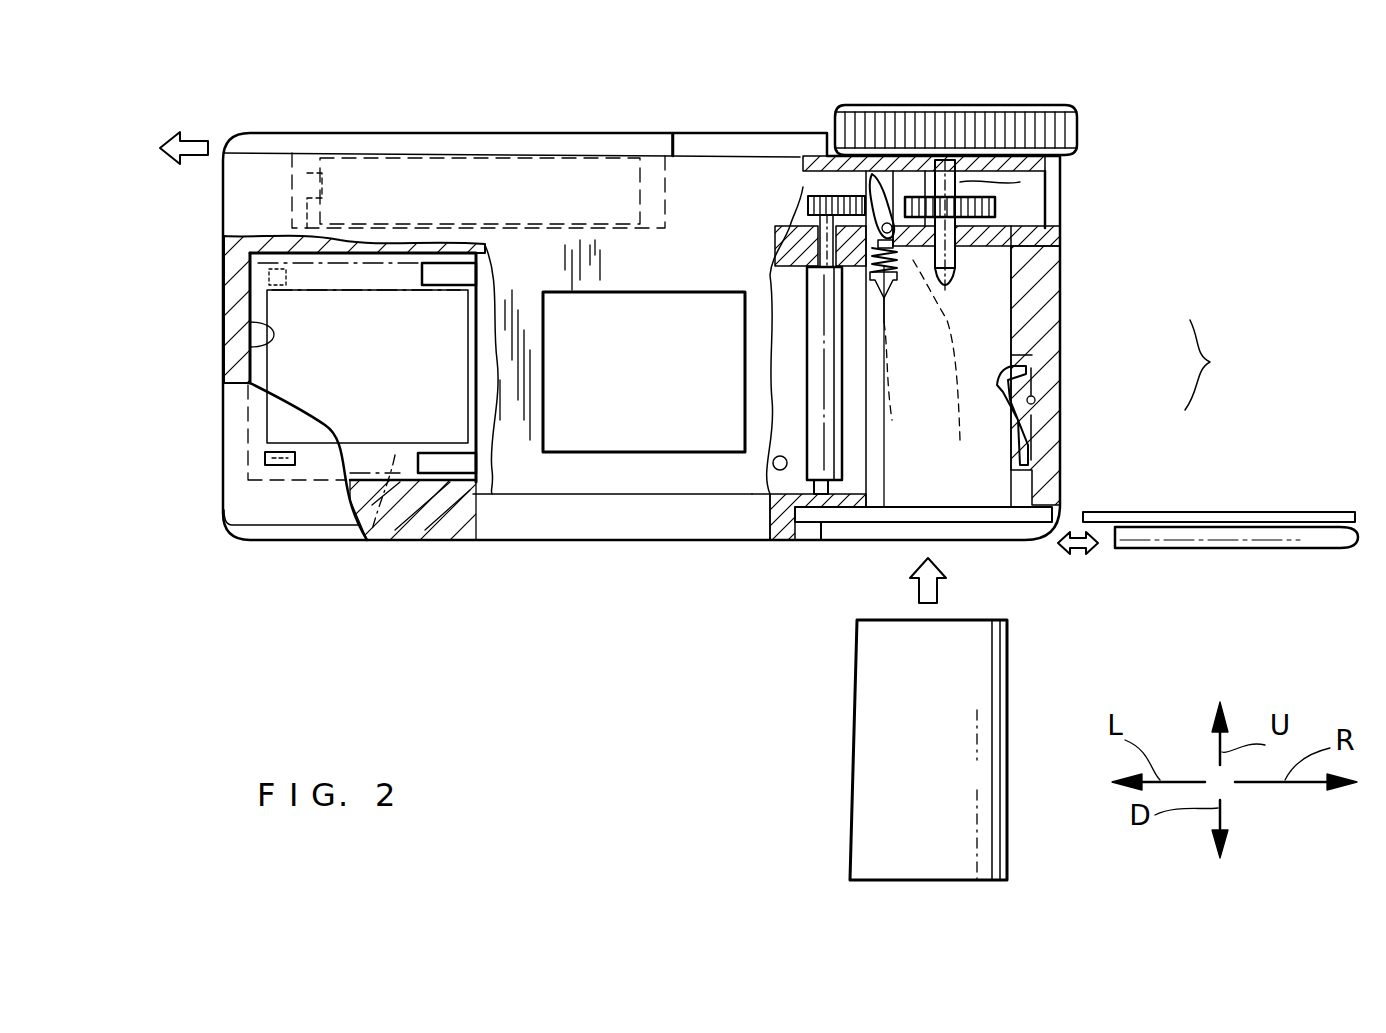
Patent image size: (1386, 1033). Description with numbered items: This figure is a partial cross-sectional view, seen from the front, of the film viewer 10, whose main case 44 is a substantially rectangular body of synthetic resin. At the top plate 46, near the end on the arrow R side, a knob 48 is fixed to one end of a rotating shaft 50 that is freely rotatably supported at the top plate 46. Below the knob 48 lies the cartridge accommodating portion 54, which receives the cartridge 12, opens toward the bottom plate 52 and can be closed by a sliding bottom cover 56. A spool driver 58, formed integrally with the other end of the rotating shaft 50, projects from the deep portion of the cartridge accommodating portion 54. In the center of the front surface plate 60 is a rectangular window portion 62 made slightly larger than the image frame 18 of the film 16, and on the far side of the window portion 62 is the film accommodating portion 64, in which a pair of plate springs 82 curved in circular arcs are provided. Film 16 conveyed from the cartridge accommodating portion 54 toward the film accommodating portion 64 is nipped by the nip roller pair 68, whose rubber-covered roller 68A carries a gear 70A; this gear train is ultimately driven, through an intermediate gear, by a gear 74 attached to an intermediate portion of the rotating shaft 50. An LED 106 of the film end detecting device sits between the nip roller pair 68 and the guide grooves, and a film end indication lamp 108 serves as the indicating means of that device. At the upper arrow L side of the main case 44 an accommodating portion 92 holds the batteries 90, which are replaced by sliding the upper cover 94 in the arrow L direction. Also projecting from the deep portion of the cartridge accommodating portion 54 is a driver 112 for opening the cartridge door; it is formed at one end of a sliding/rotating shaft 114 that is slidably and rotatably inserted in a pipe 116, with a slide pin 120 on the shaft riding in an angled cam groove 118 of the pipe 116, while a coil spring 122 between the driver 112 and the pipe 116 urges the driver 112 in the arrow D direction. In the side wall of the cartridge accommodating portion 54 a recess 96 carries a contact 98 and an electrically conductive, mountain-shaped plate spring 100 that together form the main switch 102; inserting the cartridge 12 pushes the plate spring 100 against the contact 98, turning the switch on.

The film viewer 10 is at (1062, 307).
The cartridge 12 is at (1007, 820).
The film 16 is at (387, 500).
The image frame 18 is at (410, 462).
The main case 44 is at (1055, 236).
The top plate 46 is at (716, 136).
The knob 48 is at (1077, 130).
The rotating shaft 50 is at (972, 185).
The bottom plate 52 is at (783, 552).
The cartridge accommodating portion 54 is at (1030, 540).
The sliding bottom cover 56 is at (1212, 550).
The spool driver 58 is at (957, 273).
The front surface plate 60 is at (557, 527).
The window portion 62 is at (542, 433).
The film accommodating portion 64 is at (272, 343).
The nip roller pair 68 is at (852, 406).
The roller 68A is at (837, 503).
The gear 70A is at (803, 187).
The gear 74 is at (995, 205).
The plate springs 82 is at (452, 270).
The batteries 90 is at (322, 153).
The accommodating portion 92 is at (300, 187).
The upper cover 94 is at (248, 137).
The recess 96 is at (1012, 466).
The contact 98 is at (1033, 382).
The plate spring 100 is at (1040, 412).
The main switch 102 is at (1226, 365).
The LED 106 is at (773, 463).
The film end indication lamp 108 is at (265, 460).
The driver 112 is at (884, 305).
The sliding/rotating shaft 114 is at (905, 262).
The pipe 116 is at (958, 162).
The cam groove 118 is at (878, 178).
The slide pin 120 is at (945, 205).
The coil spring 122 is at (925, 300).